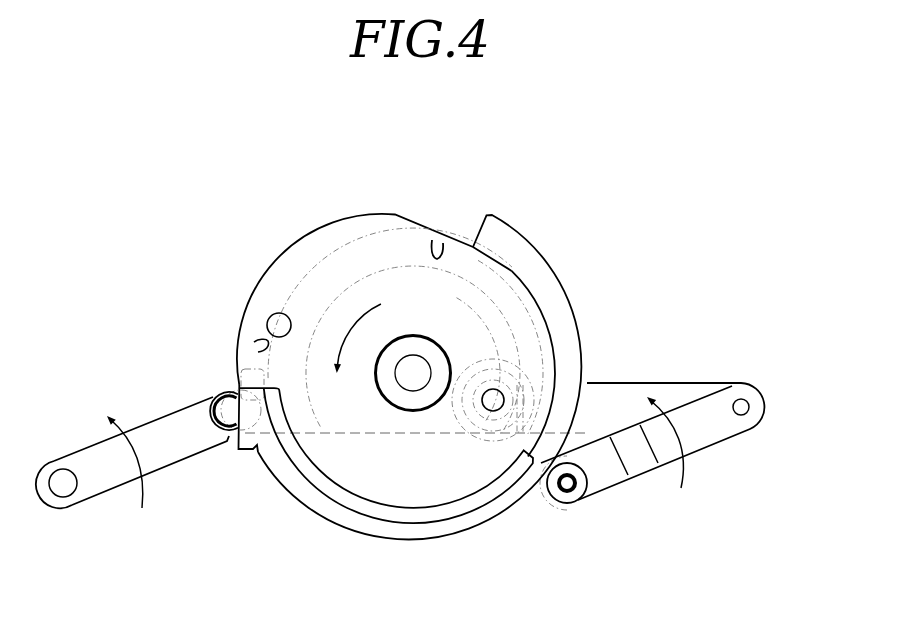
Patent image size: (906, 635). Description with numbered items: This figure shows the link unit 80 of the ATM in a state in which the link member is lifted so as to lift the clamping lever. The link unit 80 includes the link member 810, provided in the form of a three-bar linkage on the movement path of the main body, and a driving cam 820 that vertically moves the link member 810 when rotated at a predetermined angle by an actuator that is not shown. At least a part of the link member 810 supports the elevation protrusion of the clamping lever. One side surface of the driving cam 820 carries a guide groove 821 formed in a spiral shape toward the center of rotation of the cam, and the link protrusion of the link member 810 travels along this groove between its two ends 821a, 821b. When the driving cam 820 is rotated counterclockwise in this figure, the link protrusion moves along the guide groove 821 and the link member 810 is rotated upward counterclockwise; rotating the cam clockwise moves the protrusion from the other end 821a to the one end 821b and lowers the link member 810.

The link unit 80 is at (610, 251).
The link member 810 is at (682, 395).
The driving cam 820 is at (577, 318).
The guide groove 821 is at (433, 237).
The other end of the guide groove 821a is at (490, 411).
The one end of the guide groove 821b is at (258, 352).